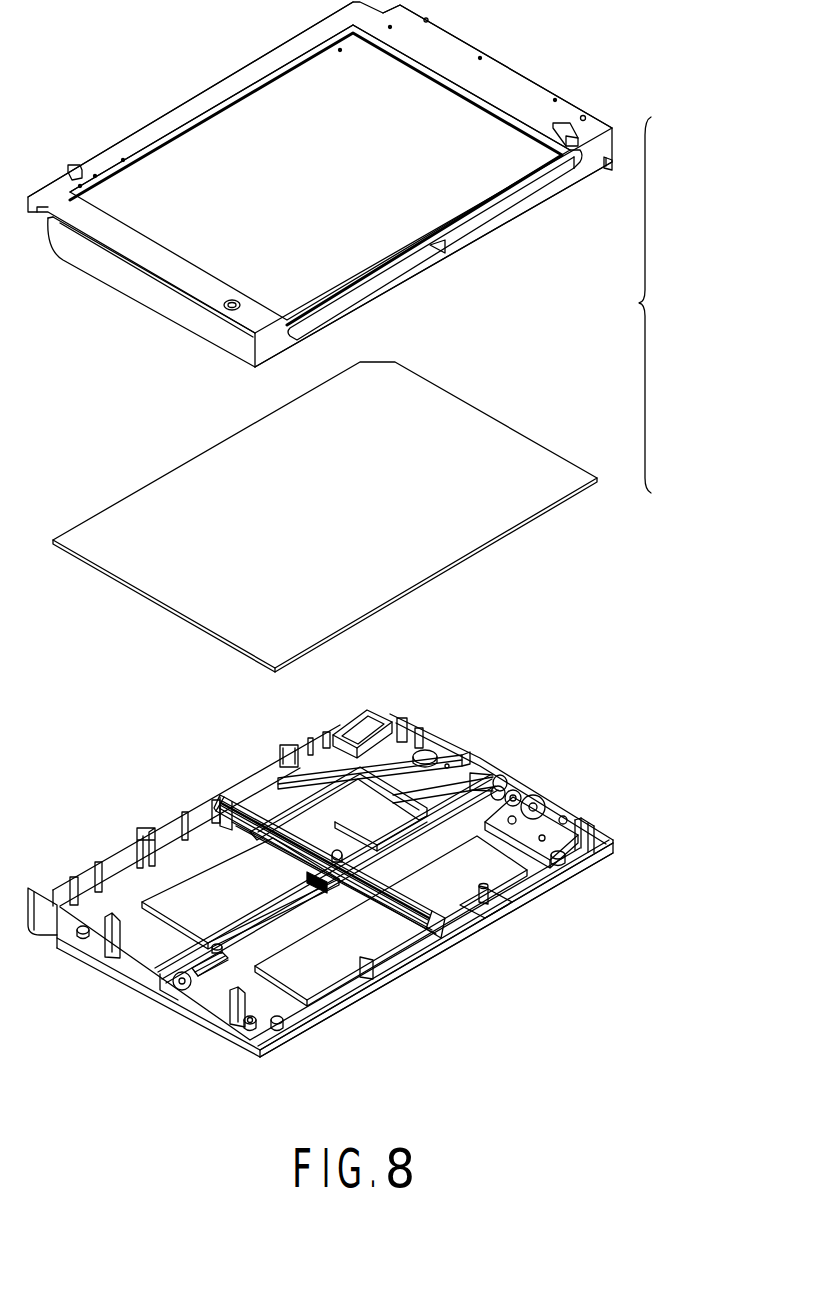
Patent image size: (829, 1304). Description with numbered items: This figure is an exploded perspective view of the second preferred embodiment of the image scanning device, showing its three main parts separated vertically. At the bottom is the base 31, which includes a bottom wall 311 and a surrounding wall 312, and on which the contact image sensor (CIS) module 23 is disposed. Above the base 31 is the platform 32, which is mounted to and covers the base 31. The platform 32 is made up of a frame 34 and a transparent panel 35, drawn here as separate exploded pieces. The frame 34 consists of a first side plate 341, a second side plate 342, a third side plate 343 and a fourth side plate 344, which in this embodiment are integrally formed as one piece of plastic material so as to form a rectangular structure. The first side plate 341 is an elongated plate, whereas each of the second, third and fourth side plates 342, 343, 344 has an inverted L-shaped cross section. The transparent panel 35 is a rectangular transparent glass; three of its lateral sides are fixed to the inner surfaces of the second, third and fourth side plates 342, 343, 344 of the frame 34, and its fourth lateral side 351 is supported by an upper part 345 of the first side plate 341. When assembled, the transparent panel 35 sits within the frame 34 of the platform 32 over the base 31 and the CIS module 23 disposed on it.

The frame 34 is at (341, 187).
The second side plate 342 is at (232, 83).
The fourth side plate 344 is at (450, 60).
The first side plate 341 is at (517, 208).
The upper part 345 is at (385, 267).
The third side plate 343 is at (137, 288).
The platform 32 is at (666, 305).
The transparent panel 35 is at (332, 517).
The fourth lateral side 351 is at (513, 527).
The base 31 is at (363, 883).
The bottom wall 311 is at (535, 867).
The surrounding wall 312 is at (468, 930).
The contact image sensor (CIS) module 23 is at (398, 922).